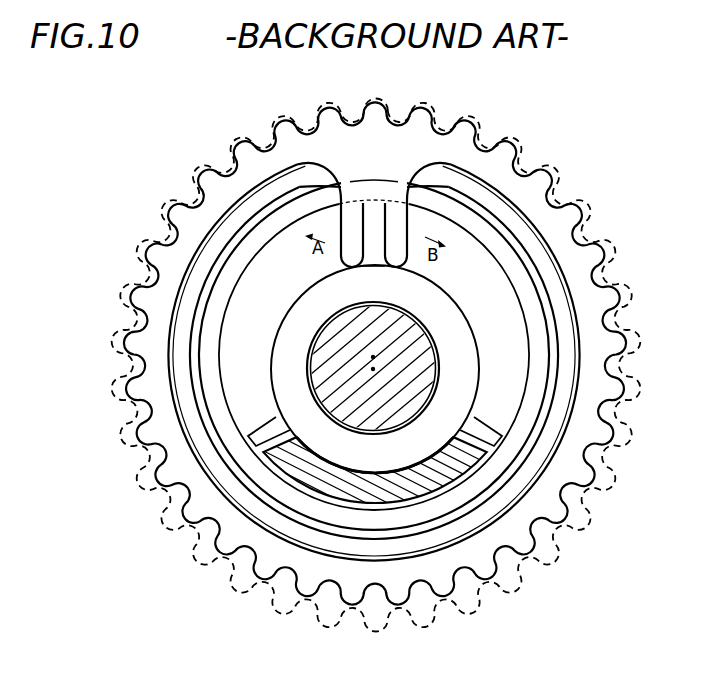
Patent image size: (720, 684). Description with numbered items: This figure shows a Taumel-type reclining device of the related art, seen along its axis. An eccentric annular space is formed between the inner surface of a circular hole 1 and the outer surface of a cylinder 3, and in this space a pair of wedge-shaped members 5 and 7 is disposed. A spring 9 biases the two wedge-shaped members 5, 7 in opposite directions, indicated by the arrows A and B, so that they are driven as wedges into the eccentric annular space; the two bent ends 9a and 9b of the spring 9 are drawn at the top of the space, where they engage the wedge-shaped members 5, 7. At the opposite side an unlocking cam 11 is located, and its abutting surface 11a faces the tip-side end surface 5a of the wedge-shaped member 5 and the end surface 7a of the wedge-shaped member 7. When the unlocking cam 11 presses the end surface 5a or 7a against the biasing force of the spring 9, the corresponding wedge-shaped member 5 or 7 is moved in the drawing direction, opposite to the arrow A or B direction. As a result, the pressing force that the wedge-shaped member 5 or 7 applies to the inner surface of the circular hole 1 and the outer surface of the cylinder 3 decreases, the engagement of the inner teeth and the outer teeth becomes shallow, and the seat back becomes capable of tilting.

The circular hole 1 is at (262, 456).
The cylinder 3 is at (406, 453).
The wedge-shaped member 5 is at (263, 278).
The end surface 5a is at (276, 418).
The wedge-shaped member 7 is at (500, 297).
The end surface 7a is at (477, 421).
The spring 9 is at (393, 548).
The first spring end 9a is at (361, 252).
The second spring end 9b is at (390, 252).
The unlocking cam 11 is at (410, 455).
The abutting surface 11a is at (495, 452).